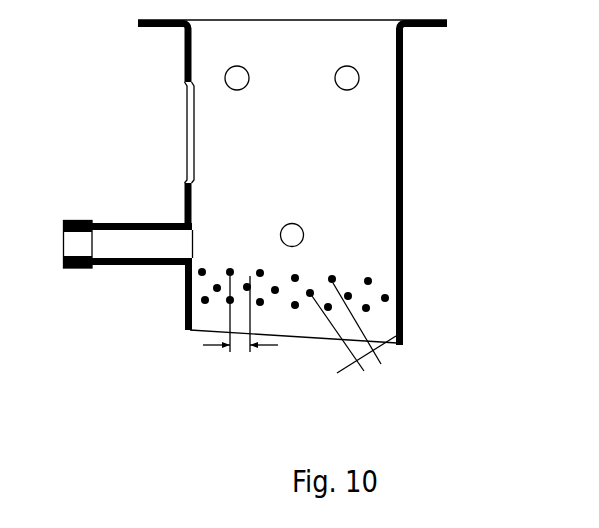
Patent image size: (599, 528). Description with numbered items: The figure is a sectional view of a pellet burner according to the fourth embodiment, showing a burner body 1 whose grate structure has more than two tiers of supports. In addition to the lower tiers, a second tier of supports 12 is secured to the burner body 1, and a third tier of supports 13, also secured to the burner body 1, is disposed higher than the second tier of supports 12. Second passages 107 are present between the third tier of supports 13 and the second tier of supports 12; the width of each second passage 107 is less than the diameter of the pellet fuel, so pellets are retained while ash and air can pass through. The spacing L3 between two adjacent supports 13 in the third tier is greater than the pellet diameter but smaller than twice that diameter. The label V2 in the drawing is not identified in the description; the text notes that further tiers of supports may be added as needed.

The burner body 1 is at (403, 213).
The second tier of supports 12 is at (216, 291).
The third tier of supports 13 is at (228, 276).
The second passage 107 is at (362, 289).
The spacing between two adjacent supports in the third tier L3 is at (240, 332).
The angle V2 is at (358, 336).